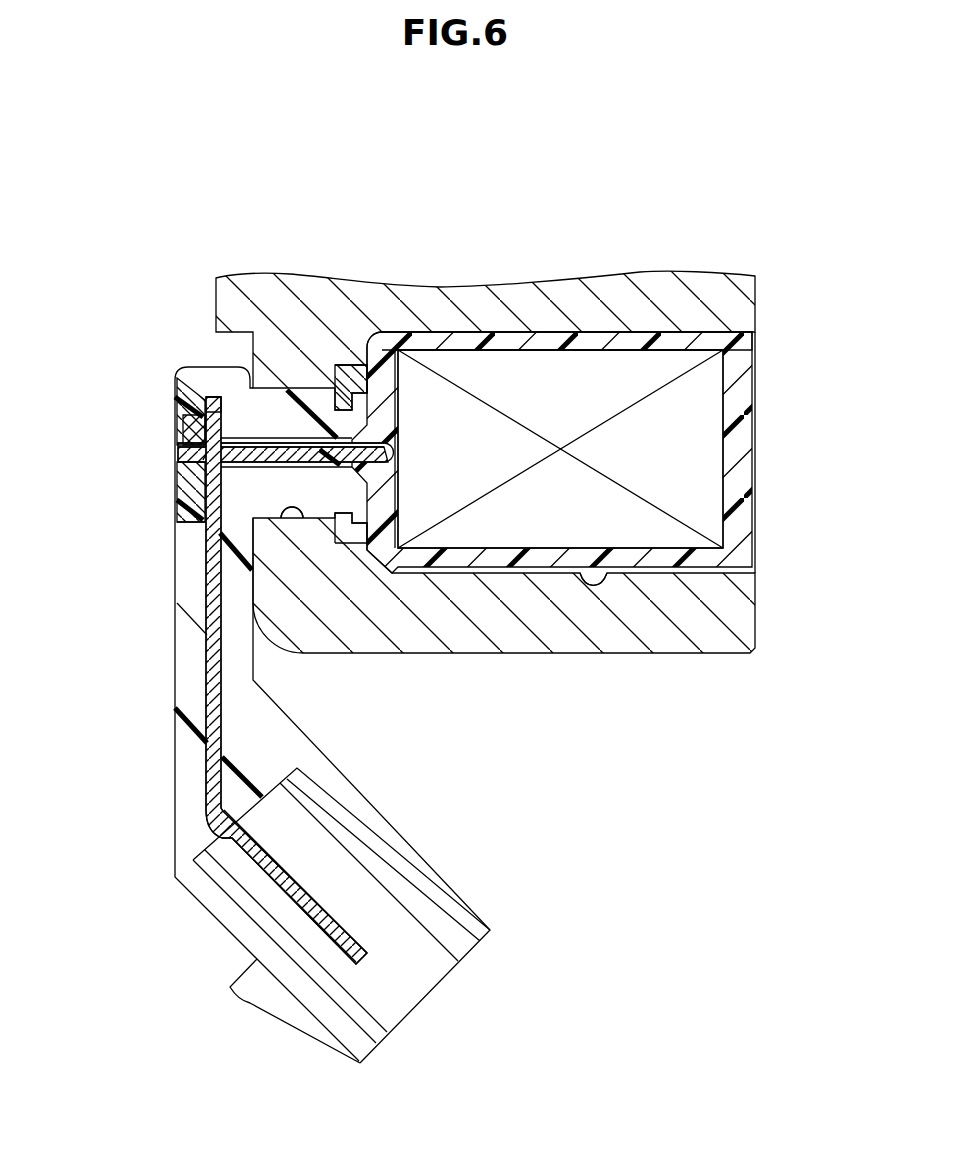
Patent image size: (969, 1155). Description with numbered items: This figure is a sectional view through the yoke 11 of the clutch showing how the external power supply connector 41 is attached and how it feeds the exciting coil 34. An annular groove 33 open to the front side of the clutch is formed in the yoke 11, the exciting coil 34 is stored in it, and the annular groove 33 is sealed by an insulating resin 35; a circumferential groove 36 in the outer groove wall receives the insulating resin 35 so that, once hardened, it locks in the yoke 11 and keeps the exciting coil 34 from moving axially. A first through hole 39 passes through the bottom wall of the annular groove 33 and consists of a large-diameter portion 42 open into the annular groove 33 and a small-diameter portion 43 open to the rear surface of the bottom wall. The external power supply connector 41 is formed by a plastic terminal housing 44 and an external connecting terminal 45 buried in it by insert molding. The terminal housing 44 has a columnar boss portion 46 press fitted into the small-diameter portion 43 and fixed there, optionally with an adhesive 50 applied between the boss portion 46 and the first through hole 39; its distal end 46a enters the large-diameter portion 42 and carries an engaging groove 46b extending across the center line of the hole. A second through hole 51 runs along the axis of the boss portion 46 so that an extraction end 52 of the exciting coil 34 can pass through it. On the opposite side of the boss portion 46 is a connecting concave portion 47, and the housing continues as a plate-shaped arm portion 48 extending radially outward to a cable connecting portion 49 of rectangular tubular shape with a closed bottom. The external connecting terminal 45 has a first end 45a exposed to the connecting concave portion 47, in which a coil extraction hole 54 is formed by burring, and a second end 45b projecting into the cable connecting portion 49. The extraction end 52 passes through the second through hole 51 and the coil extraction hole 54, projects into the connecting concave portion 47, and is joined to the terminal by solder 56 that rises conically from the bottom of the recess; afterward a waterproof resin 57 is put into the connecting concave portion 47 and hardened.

The yoke 11 is at (757, 297).
The annular groove 33 is at (540, 340).
The exciting coil 34 is at (618, 378).
The insulating resin 35 is at (704, 342).
The groove 36 is at (598, 587).
The first through hole 39 is at (317, 619).
The external power supply connector 41 is at (293, 915).
The large-diameter portion 42 is at (333, 540).
The small-diameter portion 43 is at (303, 519).
The terminal housing 44 is at (175, 750).
The external connecting terminal 45 is at (309, 652).
The first end 45a is at (212, 408).
The second end 45b is at (360, 940).
The boss portion 46 is at (250, 461).
The distal end 46a is at (348, 540).
The engaging groove 46b is at (343, 395).
The connecting concave portion 47 is at (175, 390).
The arm portion 48 is at (188, 608).
The cable connecting portion 49 is at (445, 880).
The adhesive 50 is at (333, 375).
The second through hole 51 is at (308, 455).
The extraction end 52 is at (280, 458).
The coil extraction hole 54 is at (240, 327).
The solder 56 is at (177, 478).
The waterproof resin 57 is at (177, 402).